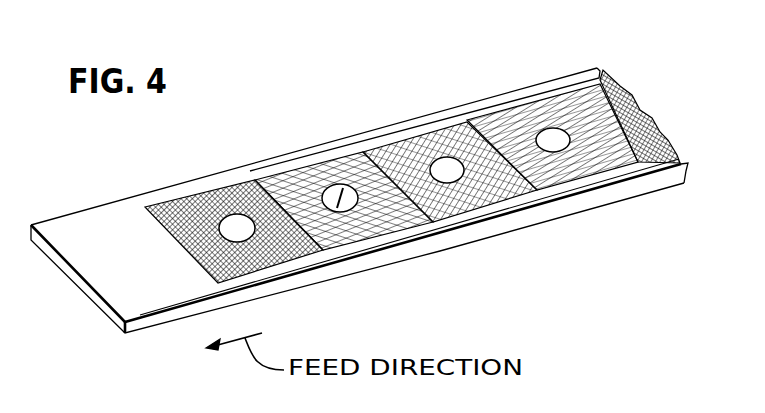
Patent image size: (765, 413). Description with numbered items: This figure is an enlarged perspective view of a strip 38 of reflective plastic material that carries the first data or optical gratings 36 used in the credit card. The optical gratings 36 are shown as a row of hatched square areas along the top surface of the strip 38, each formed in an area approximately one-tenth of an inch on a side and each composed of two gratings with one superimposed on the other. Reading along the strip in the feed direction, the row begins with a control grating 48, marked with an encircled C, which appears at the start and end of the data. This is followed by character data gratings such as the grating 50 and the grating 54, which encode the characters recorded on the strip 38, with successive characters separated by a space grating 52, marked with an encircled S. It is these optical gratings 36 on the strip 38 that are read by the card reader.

The optical gratings 36 is at (386, 136).
The strip 38 is at (77, 226).
The control grating 48 is at (188, 204).
The character data grating 50 is at (293, 170).
The space grating 52 is at (480, 206).
The character data grating 54 is at (513, 111).